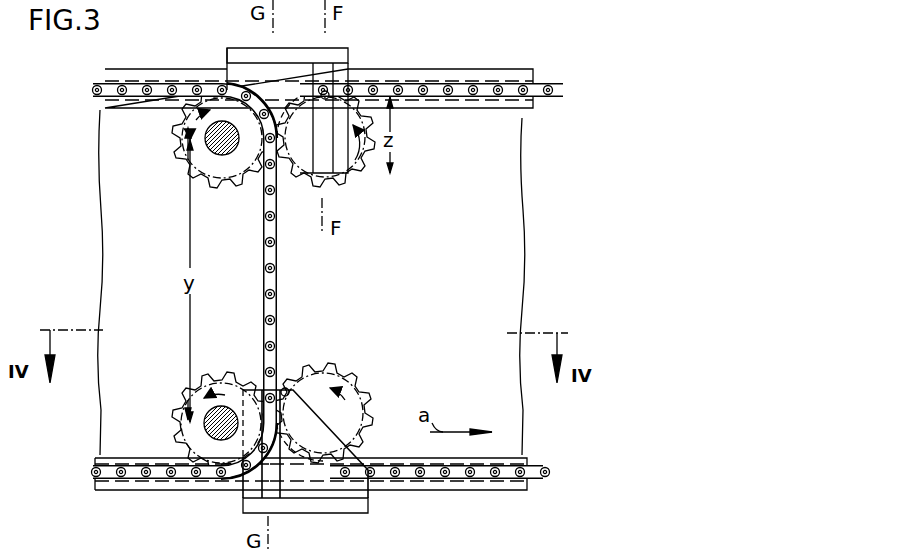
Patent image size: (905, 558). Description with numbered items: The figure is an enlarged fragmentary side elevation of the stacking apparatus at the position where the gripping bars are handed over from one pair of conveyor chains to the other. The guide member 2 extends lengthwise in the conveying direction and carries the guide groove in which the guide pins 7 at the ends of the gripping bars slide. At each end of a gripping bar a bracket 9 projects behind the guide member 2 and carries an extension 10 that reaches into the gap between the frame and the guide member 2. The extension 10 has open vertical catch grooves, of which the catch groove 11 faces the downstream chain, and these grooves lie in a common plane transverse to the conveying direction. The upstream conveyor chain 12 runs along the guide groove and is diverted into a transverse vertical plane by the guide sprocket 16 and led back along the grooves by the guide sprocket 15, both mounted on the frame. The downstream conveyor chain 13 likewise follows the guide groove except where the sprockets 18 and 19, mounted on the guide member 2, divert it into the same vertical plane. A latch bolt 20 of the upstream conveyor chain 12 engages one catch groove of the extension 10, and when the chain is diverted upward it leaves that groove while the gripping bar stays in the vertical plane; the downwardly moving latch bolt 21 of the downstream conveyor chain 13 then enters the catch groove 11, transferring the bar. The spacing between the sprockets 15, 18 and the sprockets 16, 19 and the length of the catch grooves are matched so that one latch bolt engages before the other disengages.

The guide member 2 is at (507, 268).
The guide pin 7 is at (236, 86).
The bracket 9 is at (258, 52).
The extension 10 is at (343, 178).
The catch groove 11 is at (320, 165).
The upstream conveyor chain 12 is at (96, 478).
The downstream conveyor chain 13 is at (540, 477).
The guide sprocket 15 is at (180, 126).
The guide sprocket 16 is at (178, 402).
The sprocket 18 is at (378, 168).
The sprocket 19 is at (352, 380).
The latch bolt 20 is at (263, 373).
The latch bolt 21 is at (326, 92).